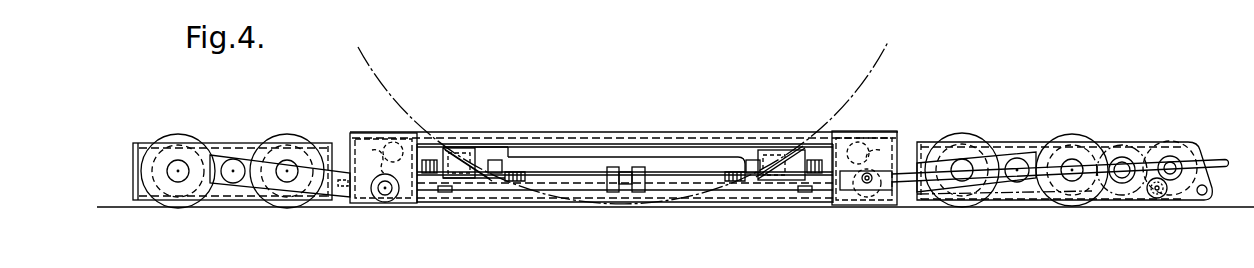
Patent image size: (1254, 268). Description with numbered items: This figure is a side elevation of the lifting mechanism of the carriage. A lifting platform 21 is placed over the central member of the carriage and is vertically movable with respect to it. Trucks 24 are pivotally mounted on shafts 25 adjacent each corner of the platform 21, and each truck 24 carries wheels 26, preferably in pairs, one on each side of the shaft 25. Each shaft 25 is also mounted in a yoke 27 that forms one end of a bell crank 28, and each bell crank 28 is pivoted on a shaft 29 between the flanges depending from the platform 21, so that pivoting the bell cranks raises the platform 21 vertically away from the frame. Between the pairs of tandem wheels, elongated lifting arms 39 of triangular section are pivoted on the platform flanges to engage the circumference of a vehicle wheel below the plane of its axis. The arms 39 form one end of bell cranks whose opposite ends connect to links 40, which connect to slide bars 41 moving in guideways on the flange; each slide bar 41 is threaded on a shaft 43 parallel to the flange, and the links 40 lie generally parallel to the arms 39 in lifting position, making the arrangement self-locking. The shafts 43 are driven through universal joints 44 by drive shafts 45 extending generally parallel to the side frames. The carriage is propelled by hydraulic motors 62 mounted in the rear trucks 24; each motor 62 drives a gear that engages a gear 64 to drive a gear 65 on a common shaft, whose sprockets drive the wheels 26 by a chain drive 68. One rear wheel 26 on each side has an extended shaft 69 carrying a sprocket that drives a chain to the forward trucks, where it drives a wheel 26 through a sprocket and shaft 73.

The lifting platform 21 is at (622, 132).
The truck 24 is at (133, 145).
The shaft 25 is at (228, 179).
The wheel 26 is at (278, 134).
The yoke 27 is at (247, 191).
The bell crank 28 is at (370, 137).
The shaft 29 is at (385, 193).
The lifting arm 39 is at (454, 148).
The link 40 is at (431, 162).
The slide bar 41 is at (443, 196).
The shaft 43 is at (561, 172).
The universal joint 44 is at (873, 183).
The drive shaft 45 is at (1218, 160).
The hydraulic motor 62 is at (1193, 197).
The gear 64 is at (1148, 197).
The gear 65 is at (1118, 148).
The chain drive 68 is at (1034, 198).
The extended shaft 69 is at (1075, 160).
The shaft 73 is at (178, 166).